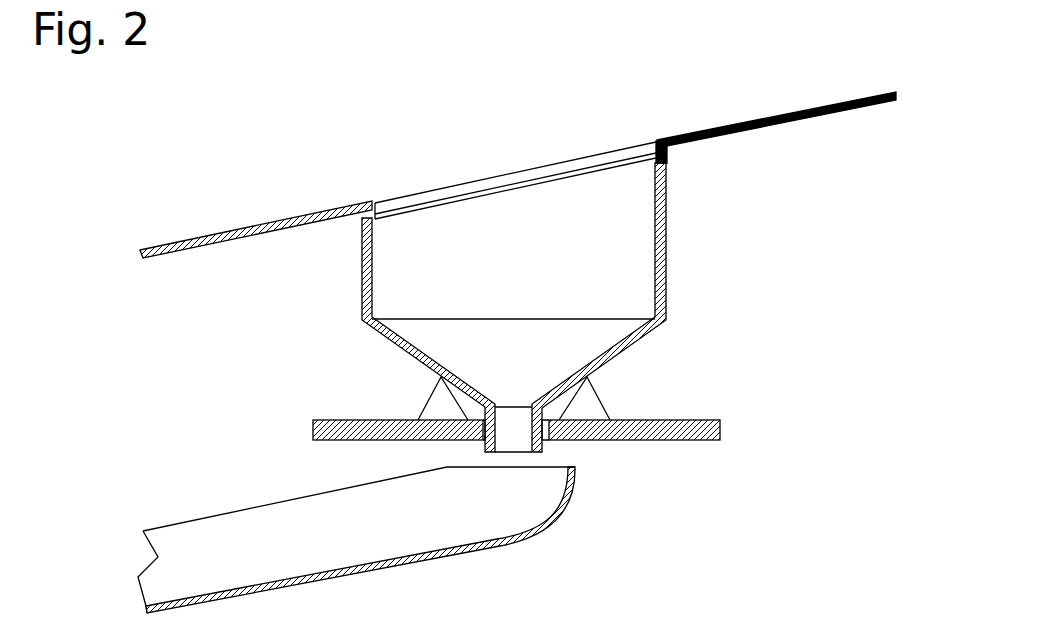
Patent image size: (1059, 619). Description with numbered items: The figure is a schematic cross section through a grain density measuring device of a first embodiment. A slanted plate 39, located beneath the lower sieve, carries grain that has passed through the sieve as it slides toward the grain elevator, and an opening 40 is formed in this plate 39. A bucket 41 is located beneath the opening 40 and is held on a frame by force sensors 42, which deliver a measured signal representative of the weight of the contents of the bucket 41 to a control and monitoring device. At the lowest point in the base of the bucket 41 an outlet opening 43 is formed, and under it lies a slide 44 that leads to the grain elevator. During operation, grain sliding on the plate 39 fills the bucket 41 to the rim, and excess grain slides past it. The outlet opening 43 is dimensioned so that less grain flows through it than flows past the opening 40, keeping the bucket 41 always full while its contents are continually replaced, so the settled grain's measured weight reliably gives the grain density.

The slanted plate 39 is at (279, 220).
The opening 40 is at (525, 172).
The bucket 41 is at (588, 268).
The force sensors 42 is at (592, 403).
The outlet opening 43 is at (510, 442).
The slide 44 is at (438, 562).